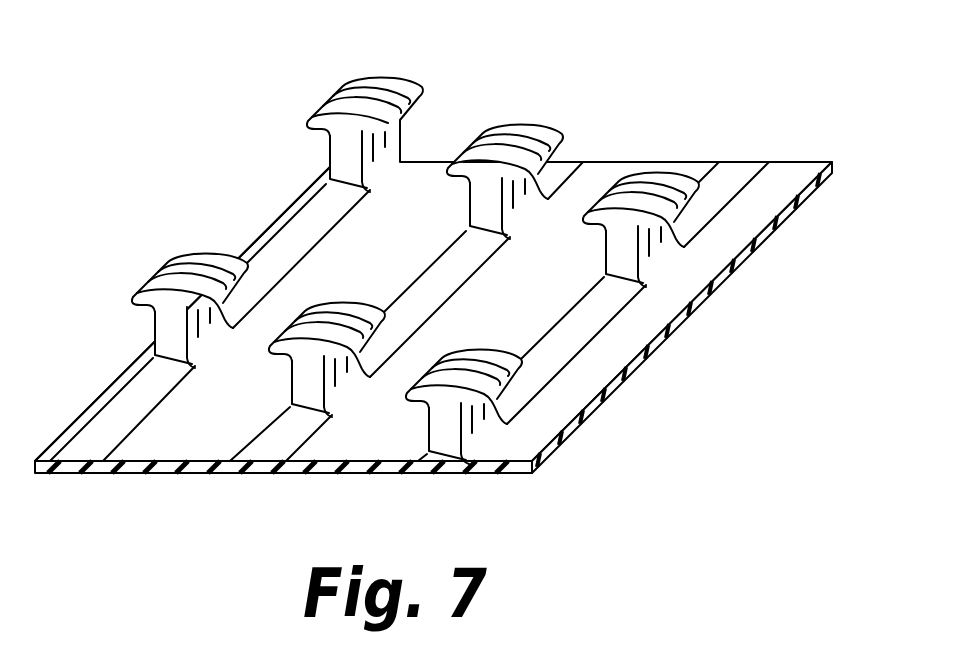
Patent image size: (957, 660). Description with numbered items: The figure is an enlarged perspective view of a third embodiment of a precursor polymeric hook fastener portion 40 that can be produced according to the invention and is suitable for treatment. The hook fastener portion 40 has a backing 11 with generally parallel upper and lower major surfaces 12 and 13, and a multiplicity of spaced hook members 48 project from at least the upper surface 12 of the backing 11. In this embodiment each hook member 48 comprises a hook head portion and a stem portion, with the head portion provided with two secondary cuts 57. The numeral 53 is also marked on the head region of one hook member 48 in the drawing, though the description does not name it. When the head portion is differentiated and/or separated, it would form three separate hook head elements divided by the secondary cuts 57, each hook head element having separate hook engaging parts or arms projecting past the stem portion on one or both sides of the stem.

The hook fastener portion 40 is at (442, 289).
The backing 11 is at (433, 352).
The upper major surface 12 is at (163, 441).
The lower major surface 13 is at (208, 478).
The hook member 48 is at (327, 88).
The fastener head 53 is at (186, 255).
The secondary cuts 57 is at (677, 205).